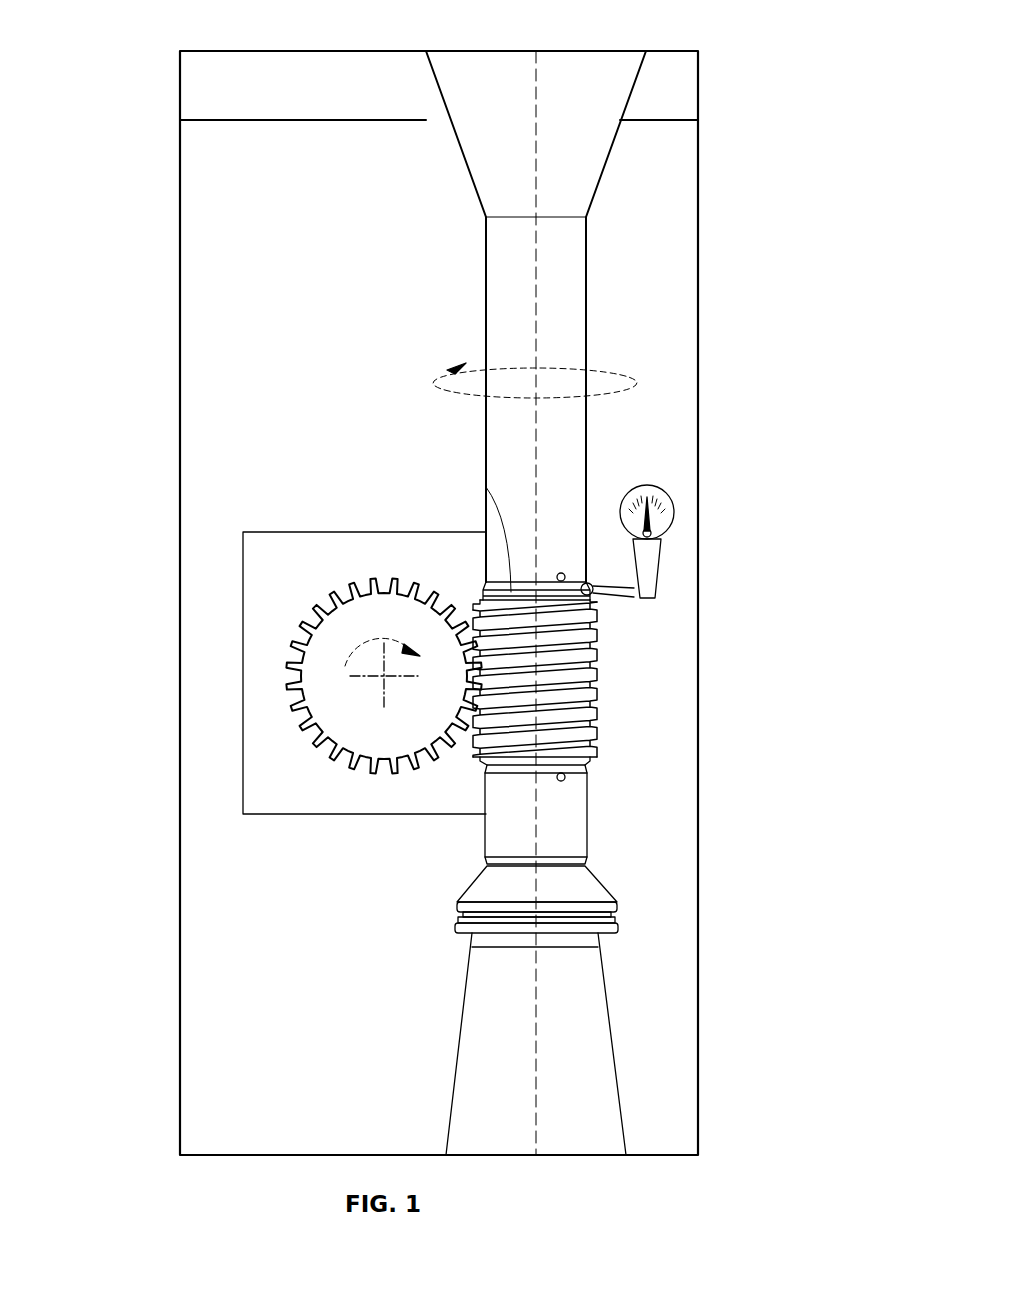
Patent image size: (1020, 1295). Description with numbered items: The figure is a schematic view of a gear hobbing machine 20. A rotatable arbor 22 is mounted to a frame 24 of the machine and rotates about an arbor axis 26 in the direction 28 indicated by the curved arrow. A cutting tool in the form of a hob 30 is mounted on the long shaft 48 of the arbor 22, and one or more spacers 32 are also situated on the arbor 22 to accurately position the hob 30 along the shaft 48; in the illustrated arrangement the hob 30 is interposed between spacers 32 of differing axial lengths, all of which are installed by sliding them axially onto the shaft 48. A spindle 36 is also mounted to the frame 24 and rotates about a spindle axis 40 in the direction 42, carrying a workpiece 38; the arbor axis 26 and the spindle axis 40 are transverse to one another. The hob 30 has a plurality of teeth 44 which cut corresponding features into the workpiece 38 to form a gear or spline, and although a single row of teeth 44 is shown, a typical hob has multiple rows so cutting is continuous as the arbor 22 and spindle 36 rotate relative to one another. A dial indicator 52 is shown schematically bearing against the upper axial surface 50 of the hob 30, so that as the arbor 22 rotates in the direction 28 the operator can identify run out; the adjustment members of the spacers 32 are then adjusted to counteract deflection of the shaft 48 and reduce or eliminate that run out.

The gear hobbing machine 20 is at (135, 262).
The rotatable arbor 22 is at (648, 401).
The frame 24 is at (210, 51).
The arbor axis 26 is at (536, 1069).
The direction 28 is at (623, 368).
The hob 30 is at (598, 677).
The spacers 32 is at (588, 473).
The spindle 36 is at (268, 532).
The workpiece 38 is at (320, 752).
The spindle axis 40 is at (384, 676).
The direction 42 is at (355, 645).
The teeth 44 is at (478, 730).
The shaft 48 is at (597, 877).
The upper axial surface 50 is at (486, 487).
The dial indicator 52 is at (674, 512).